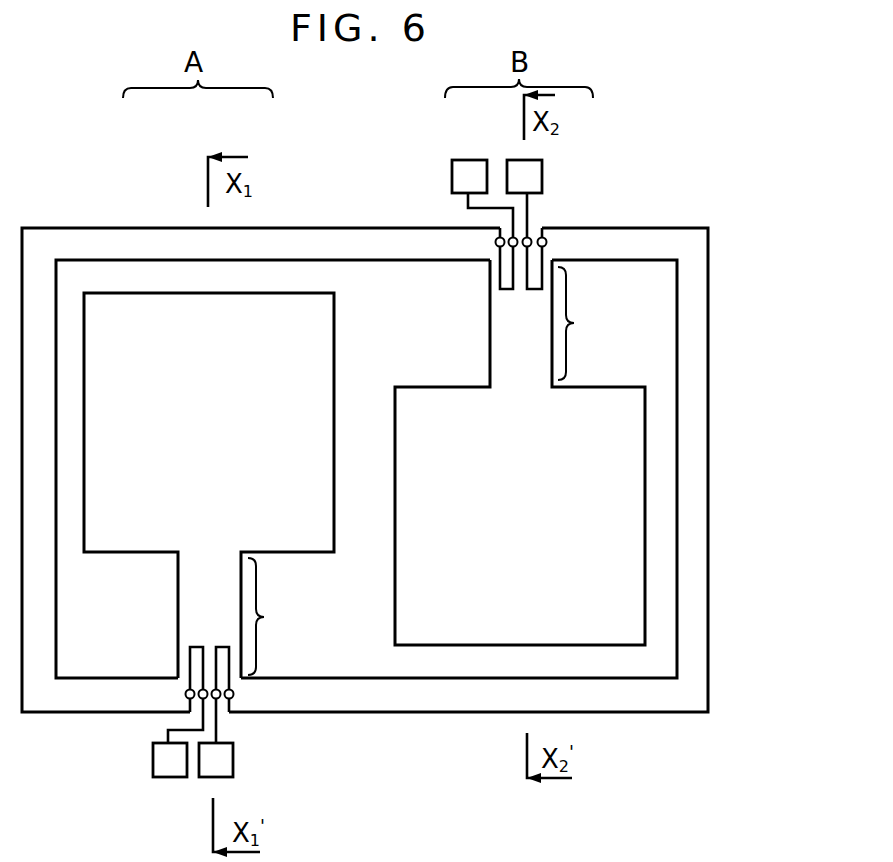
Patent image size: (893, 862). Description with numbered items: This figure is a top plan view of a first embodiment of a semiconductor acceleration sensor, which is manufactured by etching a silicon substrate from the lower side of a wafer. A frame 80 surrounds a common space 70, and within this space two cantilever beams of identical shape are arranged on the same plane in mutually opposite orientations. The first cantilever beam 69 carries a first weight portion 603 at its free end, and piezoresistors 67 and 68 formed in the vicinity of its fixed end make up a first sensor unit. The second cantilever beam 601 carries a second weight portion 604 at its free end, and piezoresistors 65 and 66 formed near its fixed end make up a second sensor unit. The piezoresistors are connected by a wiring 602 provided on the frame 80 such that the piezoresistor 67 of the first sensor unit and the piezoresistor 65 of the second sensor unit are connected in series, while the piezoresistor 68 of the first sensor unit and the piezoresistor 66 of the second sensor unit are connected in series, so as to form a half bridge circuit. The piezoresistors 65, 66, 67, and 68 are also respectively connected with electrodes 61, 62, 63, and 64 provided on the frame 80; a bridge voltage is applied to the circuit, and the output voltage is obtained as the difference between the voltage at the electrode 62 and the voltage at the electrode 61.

The frame 80 is at (75, 259).
The common space 70 is at (363, 331).
The electrode 62 is at (470, 161).
The electrode 61 is at (542, 168).
The piezoresistor 66 is at (502, 292).
The piezoresistor 65 is at (532, 292).
The second cantilever beam 601 is at (600, 323).
The wiring 602 is at (707, 457).
The first weight portion 603 is at (170, 430).
The second weight portion 604 is at (550, 532).
The piezoresistor 68 is at (199, 645).
The piezoresistor 67 is at (225, 645).
The first cantilever beam 69 is at (278, 616).
The electrode 64 is at (153, 762).
The electrode 63 is at (233, 760).